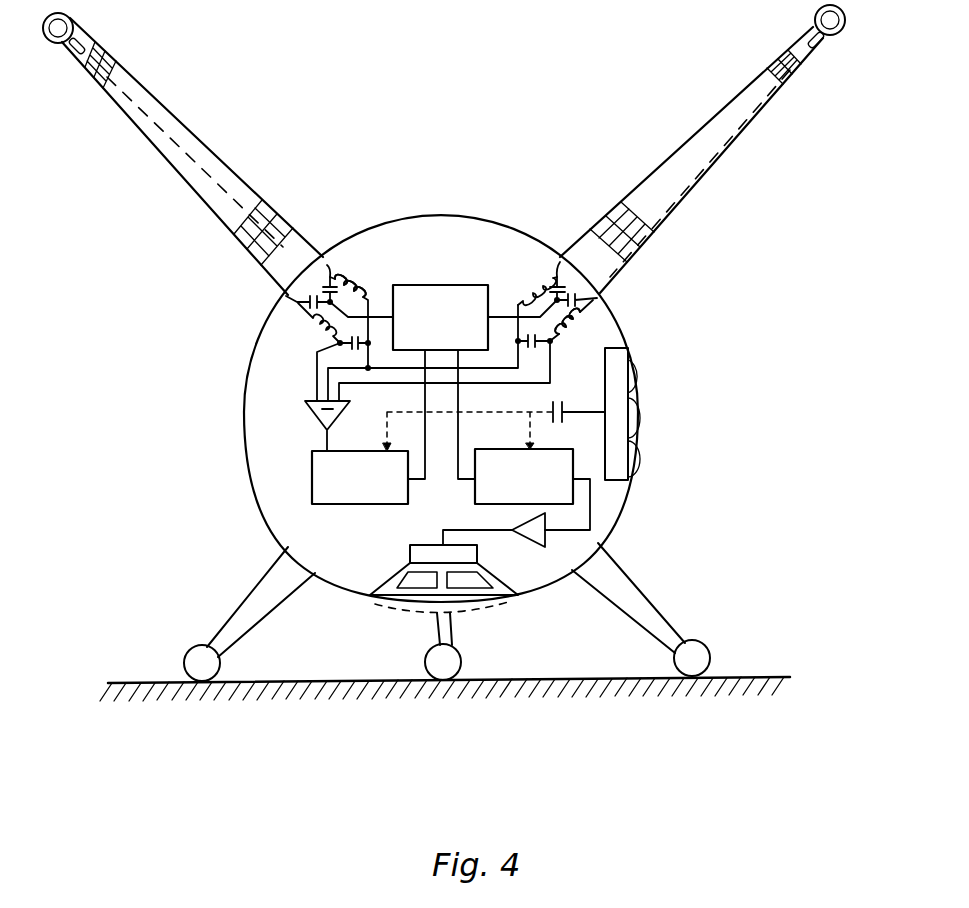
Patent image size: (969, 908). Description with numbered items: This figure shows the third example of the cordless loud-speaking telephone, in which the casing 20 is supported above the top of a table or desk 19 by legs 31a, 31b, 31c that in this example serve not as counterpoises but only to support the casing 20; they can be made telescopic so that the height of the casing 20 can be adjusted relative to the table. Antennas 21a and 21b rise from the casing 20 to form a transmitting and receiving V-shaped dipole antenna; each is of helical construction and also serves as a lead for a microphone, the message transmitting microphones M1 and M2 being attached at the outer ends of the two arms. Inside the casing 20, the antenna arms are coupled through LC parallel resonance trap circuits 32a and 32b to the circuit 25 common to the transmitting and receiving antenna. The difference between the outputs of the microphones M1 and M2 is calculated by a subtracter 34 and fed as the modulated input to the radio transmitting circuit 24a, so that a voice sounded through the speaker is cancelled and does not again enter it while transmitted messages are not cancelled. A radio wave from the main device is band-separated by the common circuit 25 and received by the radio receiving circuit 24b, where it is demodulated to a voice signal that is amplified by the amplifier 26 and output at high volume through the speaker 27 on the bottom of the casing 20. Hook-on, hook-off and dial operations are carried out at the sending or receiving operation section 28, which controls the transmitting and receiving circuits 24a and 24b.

The transmitting microphone M1 is at (73, 26).
The receiving microphone M2 is at (816, 20).
The table or desk 19 is at (275, 688).
The casing 20 is at (255, 350).
The transmitting antenna 21a is at (225, 165).
The receiving antenna 21b is at (712, 140).
The radio transmitting circuit 24a is at (312, 485).
The radio receiving circuit 24b is at (563, 487).
The circuit common to the transmitting and receiving antenna 25 is at (455, 297).
The amplifier 26 is at (533, 537).
The speaker 27 is at (383, 597).
The sending or receiving operation section 28 is at (622, 407).
The leg 31a is at (262, 600).
The leg 31b is at (648, 602).
The leg 31c is at (450, 622).
The trap circuit 32a is at (349, 278).
The trap circuit 32b is at (592, 316).
The subtracter 34 is at (312, 407).